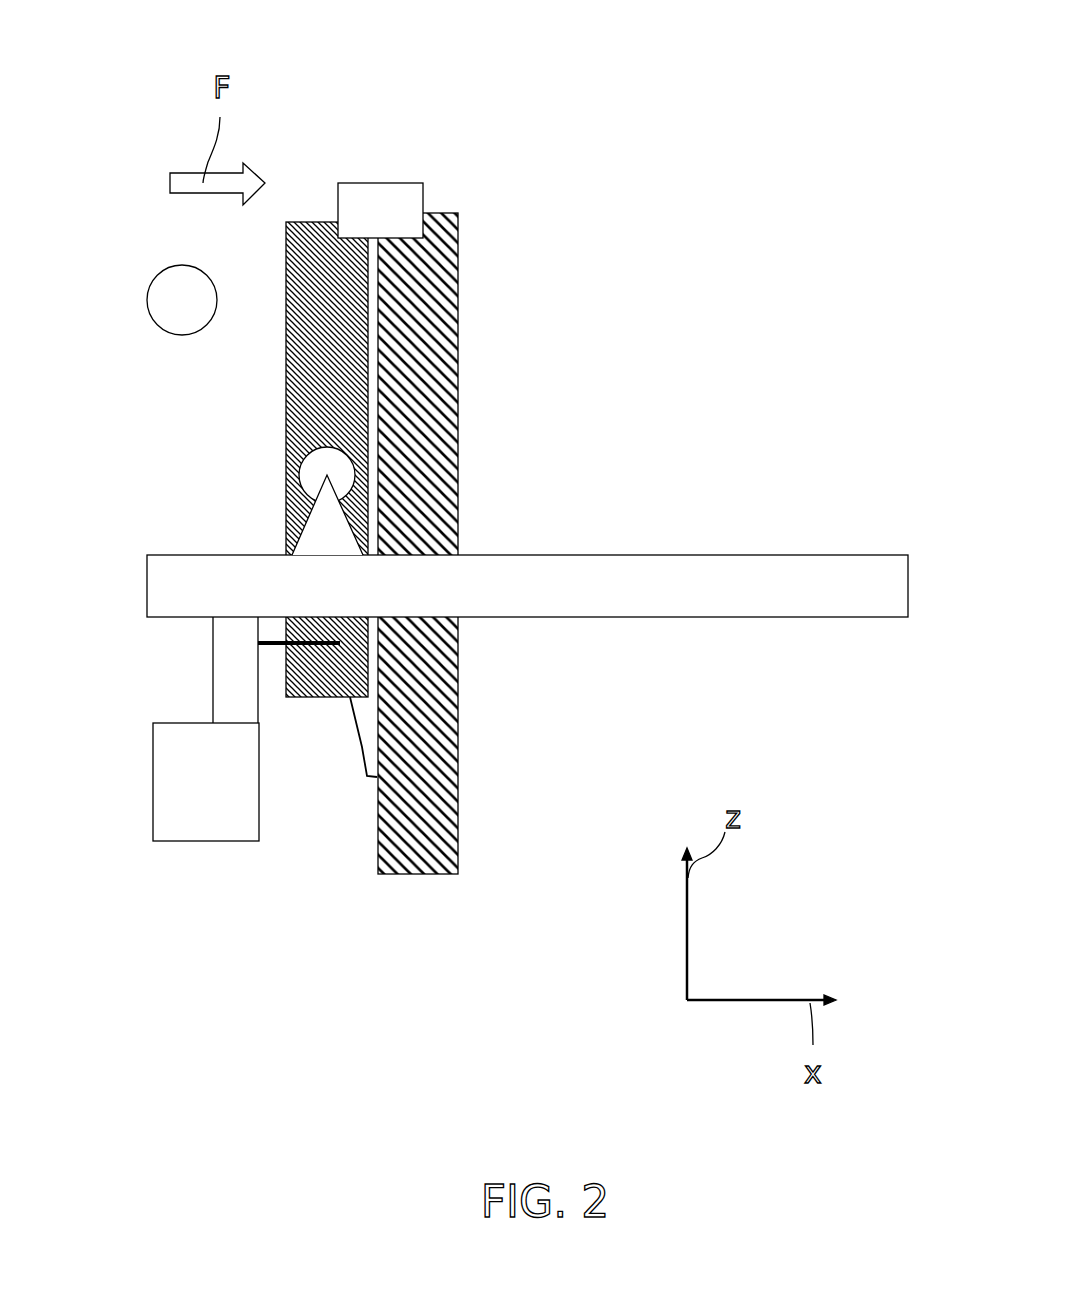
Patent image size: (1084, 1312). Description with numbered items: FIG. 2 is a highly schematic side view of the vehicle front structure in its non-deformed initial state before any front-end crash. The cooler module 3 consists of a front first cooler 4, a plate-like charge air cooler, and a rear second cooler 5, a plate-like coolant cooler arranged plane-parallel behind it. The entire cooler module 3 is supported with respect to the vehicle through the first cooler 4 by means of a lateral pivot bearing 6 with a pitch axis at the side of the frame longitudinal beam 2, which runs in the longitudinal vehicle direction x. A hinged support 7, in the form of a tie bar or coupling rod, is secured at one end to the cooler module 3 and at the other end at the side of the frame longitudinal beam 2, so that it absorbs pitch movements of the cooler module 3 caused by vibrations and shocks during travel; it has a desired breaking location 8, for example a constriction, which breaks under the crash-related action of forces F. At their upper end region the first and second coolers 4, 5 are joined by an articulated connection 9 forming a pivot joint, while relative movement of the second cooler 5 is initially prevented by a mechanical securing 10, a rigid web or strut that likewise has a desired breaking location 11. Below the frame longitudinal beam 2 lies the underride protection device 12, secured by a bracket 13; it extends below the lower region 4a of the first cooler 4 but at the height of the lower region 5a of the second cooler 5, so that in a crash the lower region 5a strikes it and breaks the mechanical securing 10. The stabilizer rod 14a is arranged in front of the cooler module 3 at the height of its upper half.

The frame longitudinal beam 2 is at (784, 585).
The cooler module 3 is at (365, 124).
The first cooler 4 is at (303, 222).
The lower region of the first cooler 4a is at (320, 665).
The second cooler 5 is at (431, 213).
The lower region of the second cooler 5a is at (428, 817).
The pivot bearing 6 is at (310, 485).
The hinged support 7 is at (280, 646).
The desired breaking location 8 is at (312, 652).
The articulated connection 9 is at (391, 210).
The mechanical securing 10 is at (353, 698).
The desired breaking location 11 is at (357, 752).
The underride protection device 12 is at (213, 770).
The bracket 13 is at (220, 643).
The stabilizer rod 14a is at (190, 300).